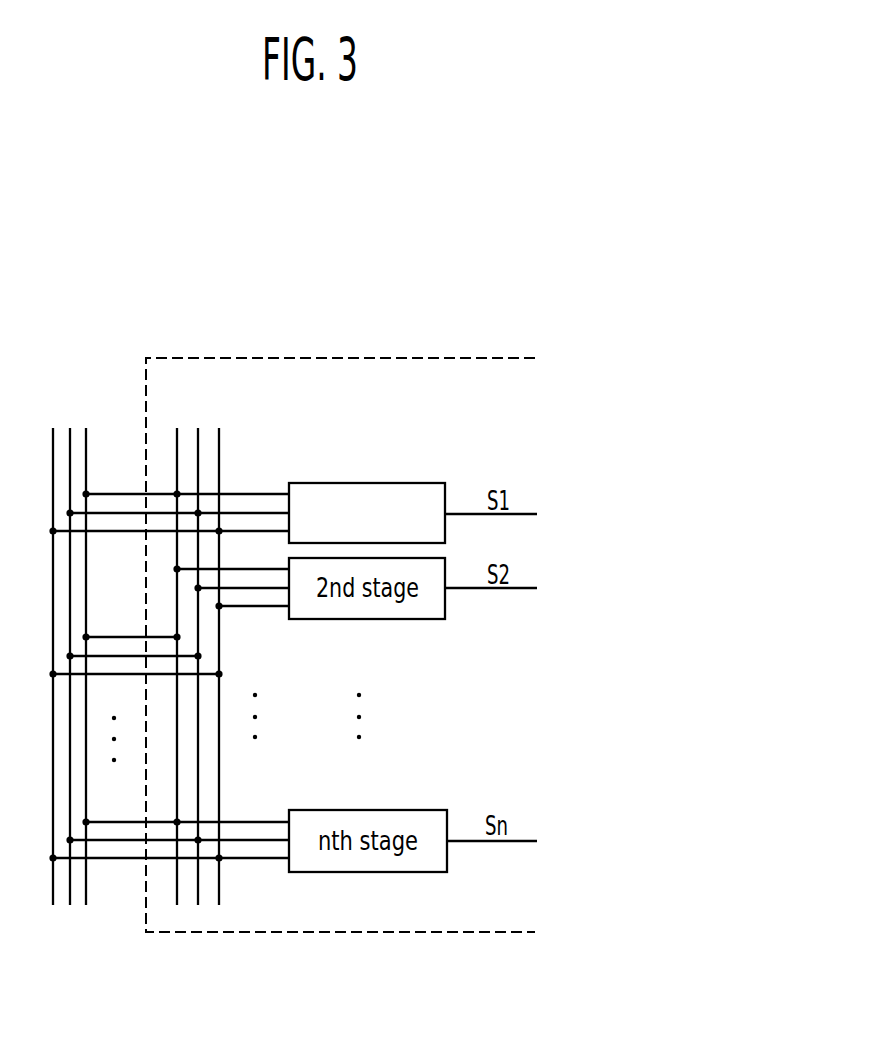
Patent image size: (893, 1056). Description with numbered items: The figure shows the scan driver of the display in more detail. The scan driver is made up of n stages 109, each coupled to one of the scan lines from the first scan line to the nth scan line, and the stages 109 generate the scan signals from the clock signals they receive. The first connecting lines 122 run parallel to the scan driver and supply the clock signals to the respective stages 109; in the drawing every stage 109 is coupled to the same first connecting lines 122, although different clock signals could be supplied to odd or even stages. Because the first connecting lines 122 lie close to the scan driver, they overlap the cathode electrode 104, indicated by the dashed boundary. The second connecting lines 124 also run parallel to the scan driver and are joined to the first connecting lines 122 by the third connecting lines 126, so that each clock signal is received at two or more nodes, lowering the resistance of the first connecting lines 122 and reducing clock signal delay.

The cathode electrode 104 is at (348, 358).
The stage 109 is at (377, 483).
The first connecting lines 122 is at (177, 905).
The second connecting lines 124 is at (53, 905).
The third connecting lines 126 is at (108, 493).